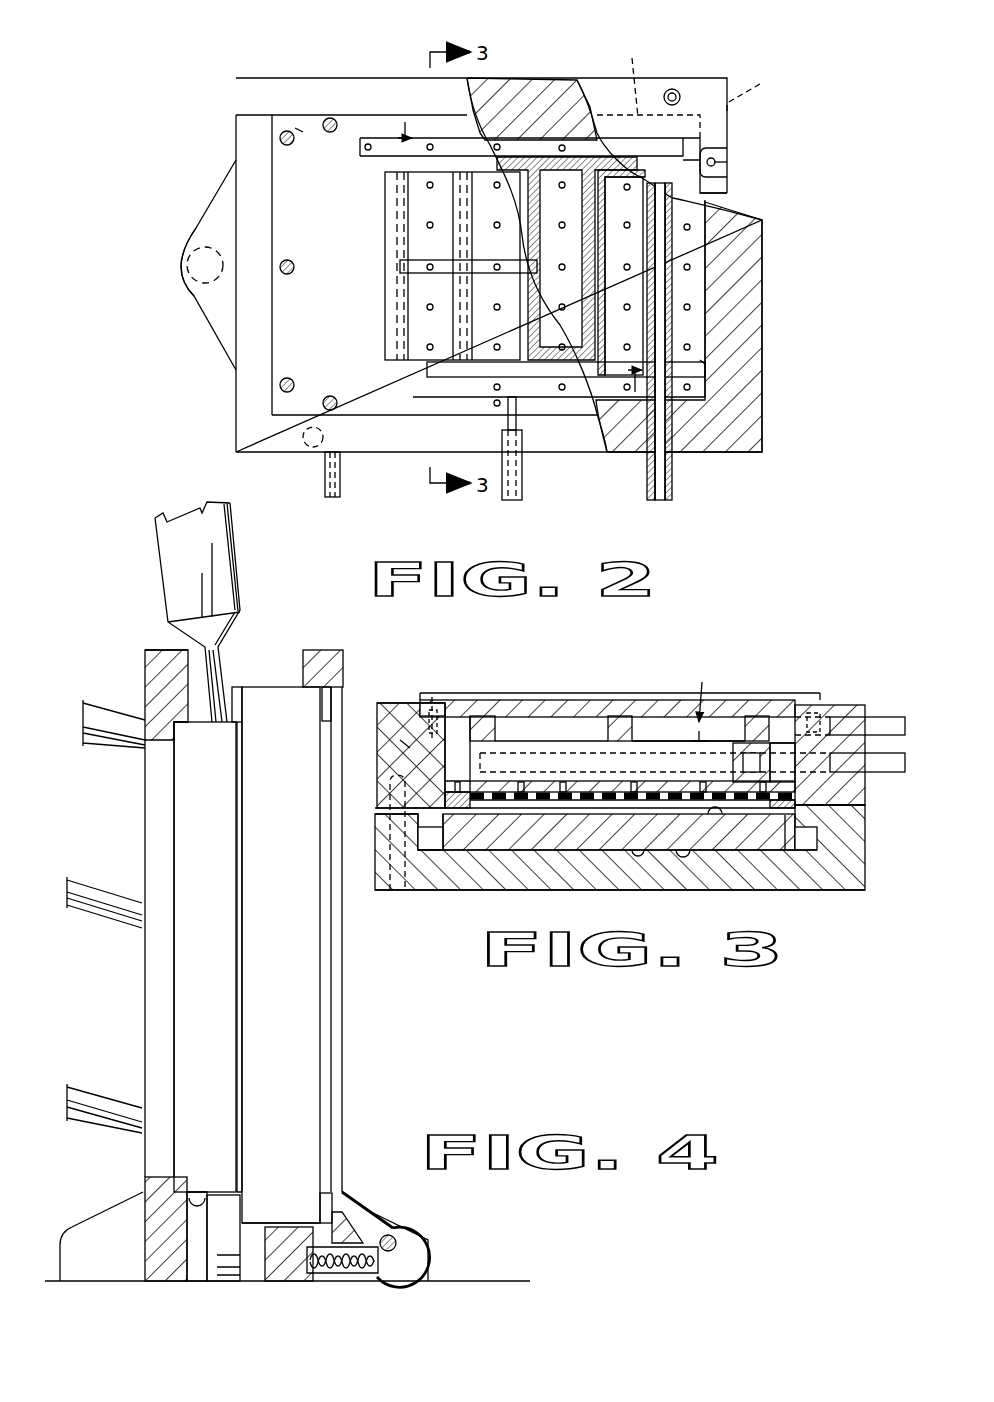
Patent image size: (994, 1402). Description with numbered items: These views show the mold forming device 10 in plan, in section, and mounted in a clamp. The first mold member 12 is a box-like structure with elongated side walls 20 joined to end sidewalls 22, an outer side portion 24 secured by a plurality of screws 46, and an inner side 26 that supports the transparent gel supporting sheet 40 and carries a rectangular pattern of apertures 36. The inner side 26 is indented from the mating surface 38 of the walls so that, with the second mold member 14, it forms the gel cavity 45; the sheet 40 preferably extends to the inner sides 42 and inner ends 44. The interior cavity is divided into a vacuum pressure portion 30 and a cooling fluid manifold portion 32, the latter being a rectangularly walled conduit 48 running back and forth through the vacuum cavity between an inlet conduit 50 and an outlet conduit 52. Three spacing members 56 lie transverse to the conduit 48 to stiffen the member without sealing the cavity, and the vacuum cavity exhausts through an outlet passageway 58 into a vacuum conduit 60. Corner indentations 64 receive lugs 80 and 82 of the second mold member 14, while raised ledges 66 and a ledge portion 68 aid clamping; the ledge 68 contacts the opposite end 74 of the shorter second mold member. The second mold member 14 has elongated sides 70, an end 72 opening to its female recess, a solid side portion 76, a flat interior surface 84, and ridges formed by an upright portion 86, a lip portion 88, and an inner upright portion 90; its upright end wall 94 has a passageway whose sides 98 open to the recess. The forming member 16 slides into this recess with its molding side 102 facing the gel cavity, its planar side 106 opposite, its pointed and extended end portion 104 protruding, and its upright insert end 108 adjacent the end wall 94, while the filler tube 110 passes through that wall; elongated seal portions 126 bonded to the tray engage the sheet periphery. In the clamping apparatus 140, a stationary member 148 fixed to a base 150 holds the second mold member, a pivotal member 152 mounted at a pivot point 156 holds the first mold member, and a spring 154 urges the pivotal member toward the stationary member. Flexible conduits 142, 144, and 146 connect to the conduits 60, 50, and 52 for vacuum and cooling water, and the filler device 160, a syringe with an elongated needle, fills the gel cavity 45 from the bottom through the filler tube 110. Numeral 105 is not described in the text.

In FIG. 2, the mold forming device 10 is at (178, 28).
In FIG. 3, the mold forming device 10 is at (849, 660).
In FIG. 2, the first mold member 12 is at (768, 248).
In FIG. 3, the first mold member 12 is at (400, 698).
In FIG. 4, the first mold member 12 is at (273, 686).
In FIG. 2, the second mold member 14 is at (722, 76).
In FIG. 3, the second mold member 14 is at (408, 893).
In FIG. 4, the second mold member 14 is at (172, 760).
In FIG. 2, the forming member 16 is at (198, 316).
In FIG. 3, the forming member 16 is at (428, 870).
In FIG. 4, the forming member 16 is at (203, 1225).
In FIG. 2, the elongated side walls 20 is at (258, 78).
In FIG. 3, the elongated side walls 20 is at (378, 712).
In FIG. 4, the elongated side walls 20 is at (308, 1020).
In FIG. 2, the end sidewalls 22 is at (236, 130).
In FIG. 2, the outer side portion 24 is at (302, 130).
In FIG. 3, the outer side portion 24 is at (553, 710).
In FIG. 2, the inner side 26 is at (690, 238).
In FIG. 3, the inner side 26 is at (540, 782).
In FIG. 2, the vacuum pressure portion 30 is at (404, 125).
In FIG. 3, the vacuum pressure portion 30 is at (701, 702).
In FIG. 2, the cooling fluid manifold portion 32 is at (677, 332).
In FIG. 3, the cooling fluid manifold portion 32 is at (688, 715).
In FIG. 2, the apertures 36 is at (690, 307).
In FIG. 3, the apertures 36 is at (515, 783).
In FIG. 3, the mating surface 38 is at (870, 830).
In FIG. 3, the transparent gel supporting sheet 40 is at (690, 805).
In FIG. 2, the inner sides 42 is at (497, 105).
In FIG. 3, the inner sides 42 is at (405, 745).
In FIG. 2, the inner ends 44 is at (700, 364).
In FIG. 3, the gel cavity 45 is at (634, 800).
In FIG. 2, the screws 46 is at (290, 275).
In FIG. 3, the screws 46 is at (432, 697).
In FIG. 2, the rectangularly walled conduit 48 is at (463, 207).
In FIG. 3, the rectangularly walled conduit 48 is at (797, 740).
In FIG. 2, the inlet conduit 50 is at (672, 482).
In FIG. 3, the inlet conduit 50 is at (882, 767).
In FIG. 2, the outlet conduit 52 is at (340, 480).
In FIG. 2, the spacing members 56 is at (385, 162).
In FIG. 3, the spacing members 56 is at (483, 712).
In FIG. 2, the outlet passageway 58 is at (516, 405).
In FIG. 3, the outlet passageway 58 is at (820, 713).
In FIG. 2, the vacuum conduit 60 is at (522, 490).
In FIG. 3, the vacuum conduit 60 is at (885, 725).
In FIG. 2, the indentations 64 is at (308, 446).
In FIG. 3, the indentations 64 is at (381, 783).
In FIG. 2, the raised ledges 66 is at (248, 385).
In FIG. 3, the raised ledges 66 is at (725, 697).
In FIG. 4, the raised ledges 66 is at (327, 708).
In FIG. 4, the ledge portion 68 is at (238, 710).
In FIG. 3, the elongated sides 70 is at (378, 860).
In FIG. 4, the end with recess opening 72 is at (196, 1200).
In FIG. 2, the opposite end 74 is at (727, 118).
In FIG. 4, the opposite end 74 is at (200, 720).
In FIG. 3, the solid side portion 76 is at (620, 888).
In FIG. 2, the lug 80 is at (674, 89).
In FIG. 3, the lug 82 is at (390, 832).
In FIG. 3, the flat interior surface 84 is at (683, 850).
In FIG. 2, the upright portion 86 is at (629, 76).
In FIG. 3, the upright portion 86 is at (868, 878).
In FIG. 3, the lip portion 88 is at (812, 845).
In FIG. 3, the inner upright portion 90 is at (800, 853).
In FIG. 2, the upright end wall 94 is at (757, 91).
In FIG. 2, the passageway sides 98 is at (727, 150).
In FIG. 3, the molding side 102 is at (715, 814).
In FIG. 2, the pointed and extended end portion 104 is at (186, 289).
In FIG. 4, the pointed and extended end portion 104 is at (213, 1243).
In FIG. 2, the hole 105 is at (195, 243).
In FIG. 3, the planar side 106 is at (640, 845).
In FIG. 2, the upright insert end 108 is at (727, 191).
In FIG. 2, the filler tube 110 is at (727, 162).
In FIG. 2, the elongated seal portions 126 is at (623, 143).
In FIG. 3, the elongated seal portions 126 is at (428, 727).
In FIG. 4, the clamping apparatus 140 is at (143, 648).
In FIG. 4, the vacuum conduit 142 is at (95, 890).
In FIG. 4, the cooling fluid conduit 144 is at (113, 730).
In FIG. 4, the cooling fluid conduit 146 is at (92, 1100).
In FIG. 4, the stationary member 148 is at (150, 660).
In FIG. 4, the base 150 is at (88, 1232).
In FIG. 4, the pivotal member 152 is at (332, 1063).
In FIG. 4, the spring 154 is at (373, 1263).
In FIG. 4, the pivot point 156 is at (390, 1234).
In FIG. 4, the filler device 160 is at (187, 510).